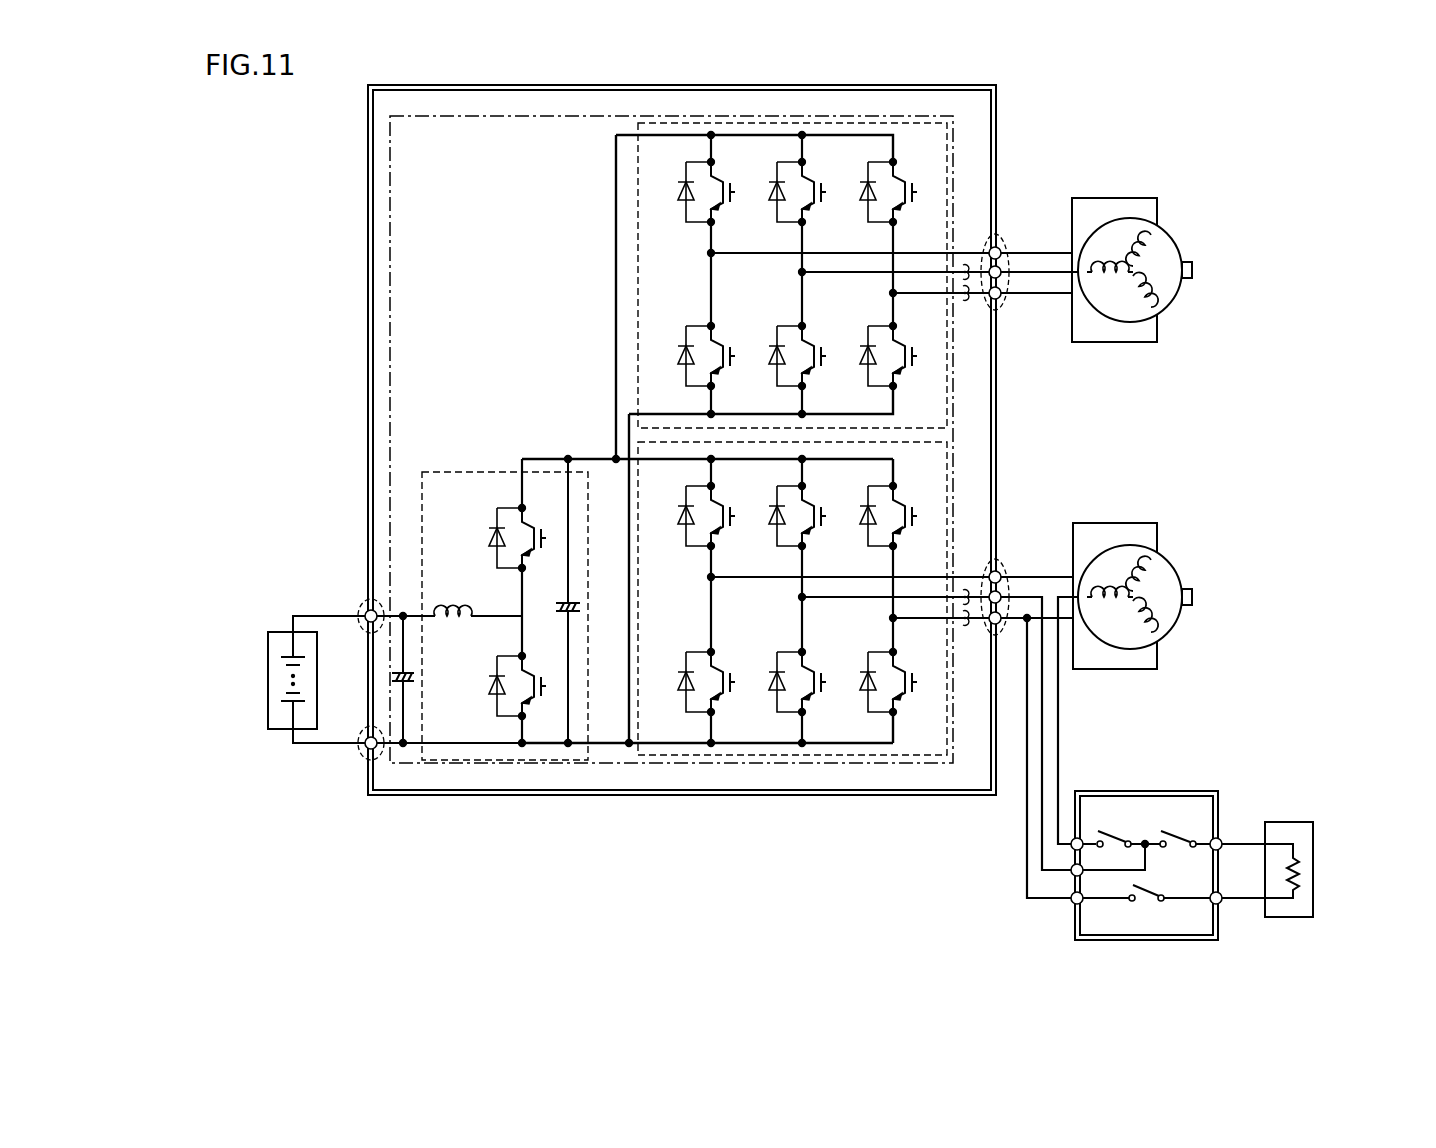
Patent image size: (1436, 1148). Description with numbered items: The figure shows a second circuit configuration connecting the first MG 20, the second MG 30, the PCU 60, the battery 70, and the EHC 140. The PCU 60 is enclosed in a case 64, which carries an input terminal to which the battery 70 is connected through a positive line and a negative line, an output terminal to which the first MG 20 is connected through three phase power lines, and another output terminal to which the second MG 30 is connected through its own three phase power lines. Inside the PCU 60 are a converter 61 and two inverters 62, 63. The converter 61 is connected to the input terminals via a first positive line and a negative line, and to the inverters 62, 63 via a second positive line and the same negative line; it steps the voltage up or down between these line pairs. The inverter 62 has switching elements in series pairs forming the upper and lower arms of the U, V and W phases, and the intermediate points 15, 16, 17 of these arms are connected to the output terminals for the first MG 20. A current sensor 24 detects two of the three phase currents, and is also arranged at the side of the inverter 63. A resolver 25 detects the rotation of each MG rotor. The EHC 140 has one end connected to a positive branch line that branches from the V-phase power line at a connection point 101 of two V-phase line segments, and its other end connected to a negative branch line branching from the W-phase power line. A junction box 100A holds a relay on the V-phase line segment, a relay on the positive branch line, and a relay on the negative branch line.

The intermediate point 15 is at (706, 253).
The intermediate point 16 is at (797, 272).
The intermediate point 17 is at (888, 293).
The first MG 20 is at (1168, 562).
The current sensor 24 is at (968, 262).
The resolver 25 is at (1191, 262).
The second MG 30 is at (1168, 236).
The PCU 60 is at (389, 214).
The converter 61 is at (502, 601).
The inverter 62 is at (792, 614).
The inverter 63 is at (781, 259).
The case 64 is at (371, 345).
The battery 70 is at (268, 718).
The connection point 101 is at (1145, 840).
The junction box 100A is at (1146, 843).
The EHC 140 is at (1300, 822).